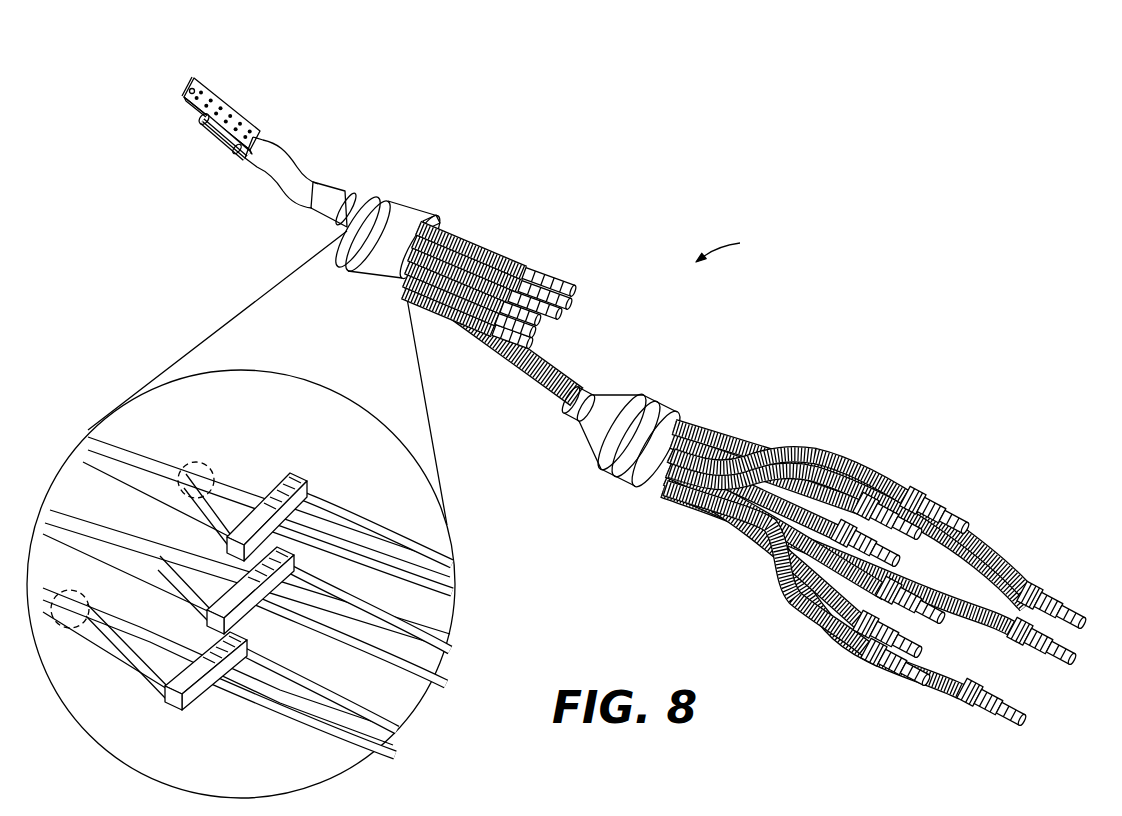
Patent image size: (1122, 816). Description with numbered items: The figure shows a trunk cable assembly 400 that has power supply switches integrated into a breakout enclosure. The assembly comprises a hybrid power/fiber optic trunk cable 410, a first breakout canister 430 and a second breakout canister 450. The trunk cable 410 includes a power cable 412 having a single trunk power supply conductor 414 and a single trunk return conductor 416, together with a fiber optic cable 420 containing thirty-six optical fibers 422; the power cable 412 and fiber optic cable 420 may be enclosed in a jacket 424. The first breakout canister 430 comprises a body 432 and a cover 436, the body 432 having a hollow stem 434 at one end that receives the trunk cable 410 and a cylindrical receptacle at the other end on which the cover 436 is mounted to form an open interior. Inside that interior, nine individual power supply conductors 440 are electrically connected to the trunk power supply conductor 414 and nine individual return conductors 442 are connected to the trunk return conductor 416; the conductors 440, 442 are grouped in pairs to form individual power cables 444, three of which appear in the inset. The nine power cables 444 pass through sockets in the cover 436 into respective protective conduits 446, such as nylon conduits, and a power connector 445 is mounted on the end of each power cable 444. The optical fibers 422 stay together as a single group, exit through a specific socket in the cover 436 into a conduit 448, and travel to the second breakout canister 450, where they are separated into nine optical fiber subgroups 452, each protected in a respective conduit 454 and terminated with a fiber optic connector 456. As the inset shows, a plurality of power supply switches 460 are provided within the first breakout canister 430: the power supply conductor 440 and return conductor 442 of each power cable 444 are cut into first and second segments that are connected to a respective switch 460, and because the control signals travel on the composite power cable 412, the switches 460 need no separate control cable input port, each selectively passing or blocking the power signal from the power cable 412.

The trunk cable assembly 400 is at (736, 247).
The hybrid power/fiber optic trunk cable 410 is at (276, 141).
The power cable 412 is at (214, 93).
The trunk power supply conductor 414 is at (198, 84).
The trunk return conductor 416 is at (197, 90).
The fiber optic cable 420 is at (206, 122).
The optical fibers 422 is at (237, 148).
The jacket 424 is at (280, 182).
The first breakout canister 430 is at (422, 200).
The body 432 is at (397, 197).
The hollow stem 434 is at (343, 193).
The cover 436 is at (433, 220).
The individual power supply conductors 440 is at (139, 450).
The individual return conductors 442 is at (151, 475).
The individual power cables 444 is at (209, 461).
The power connector 445 is at (572, 295).
The protective conduits 446 is at (500, 258).
The conduit 448 is at (524, 380).
The second breakout canister 450 is at (640, 400).
The optical fiber subgroups 452 is at (782, 452).
The conduit 454 is at (773, 577).
The fiber optic connector 456 is at (992, 716).
The power supply switches 460 is at (292, 474).